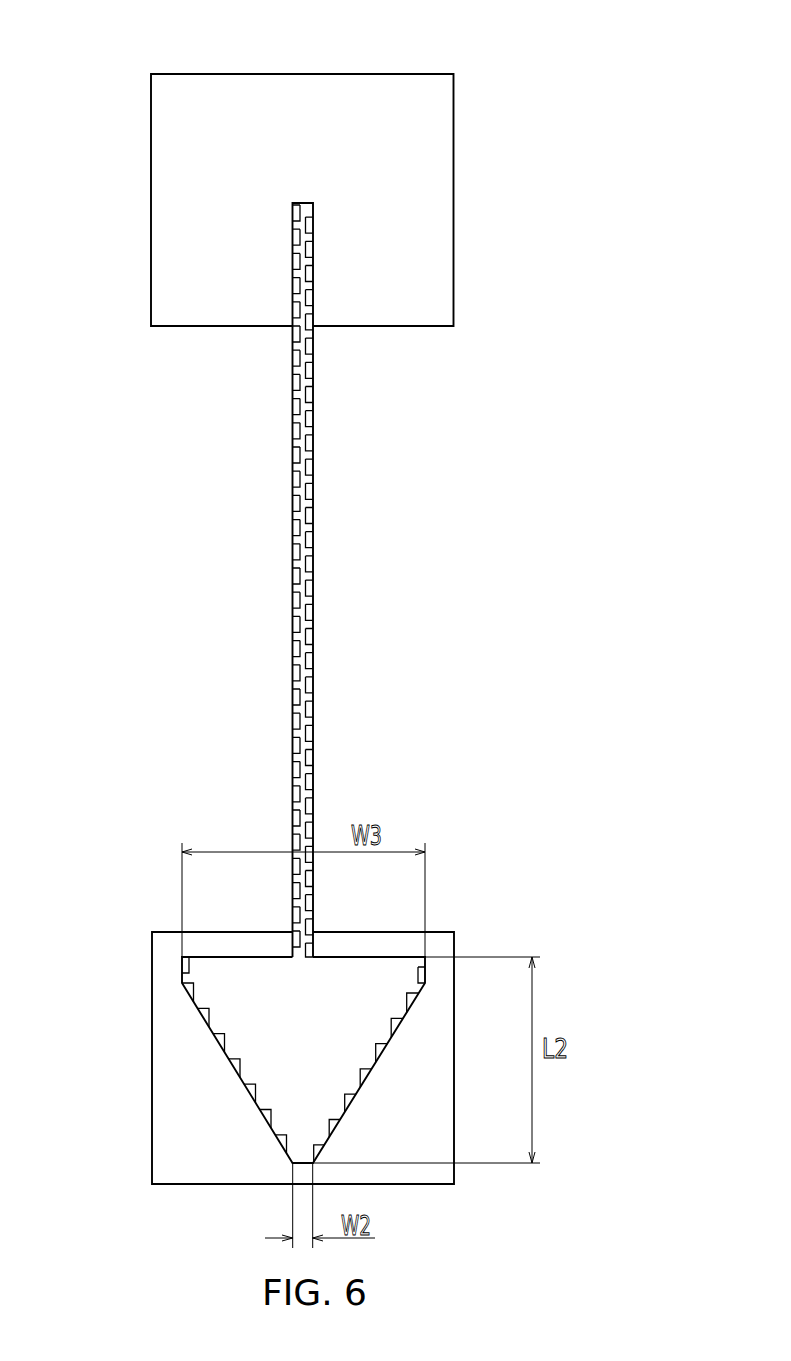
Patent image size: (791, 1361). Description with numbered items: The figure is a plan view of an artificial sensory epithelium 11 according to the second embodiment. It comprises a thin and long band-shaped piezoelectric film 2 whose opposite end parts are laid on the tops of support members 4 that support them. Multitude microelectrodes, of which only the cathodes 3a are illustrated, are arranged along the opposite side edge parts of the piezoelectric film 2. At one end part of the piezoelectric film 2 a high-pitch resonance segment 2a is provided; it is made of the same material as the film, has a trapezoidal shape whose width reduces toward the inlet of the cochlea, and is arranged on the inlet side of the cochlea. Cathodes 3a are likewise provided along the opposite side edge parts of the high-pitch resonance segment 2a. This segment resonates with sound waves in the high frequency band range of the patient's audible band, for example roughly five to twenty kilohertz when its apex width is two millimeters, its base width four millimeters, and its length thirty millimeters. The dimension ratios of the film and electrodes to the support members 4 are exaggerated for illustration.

The artificial sensory epithelium 11 is at (297, 595).
The support member 4 is at (151, 200).
The piezoelectric film 2 is at (315, 452).
The high-pitch resonance segment 2a is at (260, 1058).
The cathode 3a is at (313, 537).